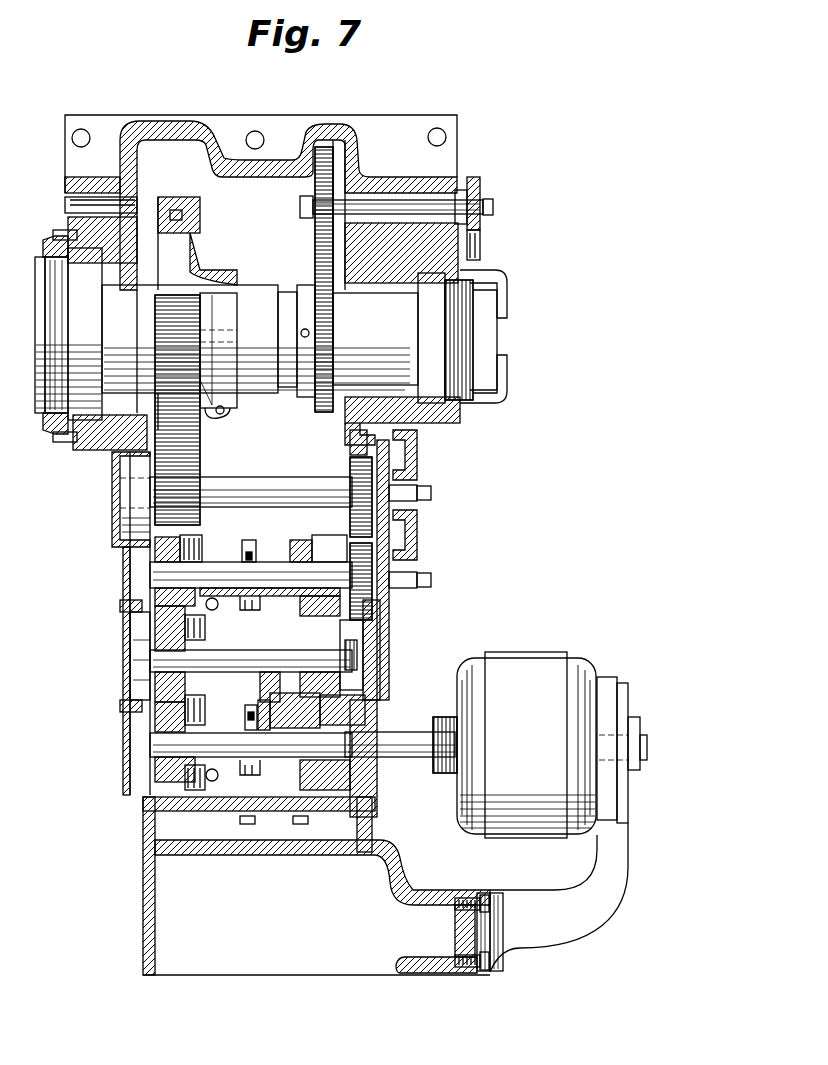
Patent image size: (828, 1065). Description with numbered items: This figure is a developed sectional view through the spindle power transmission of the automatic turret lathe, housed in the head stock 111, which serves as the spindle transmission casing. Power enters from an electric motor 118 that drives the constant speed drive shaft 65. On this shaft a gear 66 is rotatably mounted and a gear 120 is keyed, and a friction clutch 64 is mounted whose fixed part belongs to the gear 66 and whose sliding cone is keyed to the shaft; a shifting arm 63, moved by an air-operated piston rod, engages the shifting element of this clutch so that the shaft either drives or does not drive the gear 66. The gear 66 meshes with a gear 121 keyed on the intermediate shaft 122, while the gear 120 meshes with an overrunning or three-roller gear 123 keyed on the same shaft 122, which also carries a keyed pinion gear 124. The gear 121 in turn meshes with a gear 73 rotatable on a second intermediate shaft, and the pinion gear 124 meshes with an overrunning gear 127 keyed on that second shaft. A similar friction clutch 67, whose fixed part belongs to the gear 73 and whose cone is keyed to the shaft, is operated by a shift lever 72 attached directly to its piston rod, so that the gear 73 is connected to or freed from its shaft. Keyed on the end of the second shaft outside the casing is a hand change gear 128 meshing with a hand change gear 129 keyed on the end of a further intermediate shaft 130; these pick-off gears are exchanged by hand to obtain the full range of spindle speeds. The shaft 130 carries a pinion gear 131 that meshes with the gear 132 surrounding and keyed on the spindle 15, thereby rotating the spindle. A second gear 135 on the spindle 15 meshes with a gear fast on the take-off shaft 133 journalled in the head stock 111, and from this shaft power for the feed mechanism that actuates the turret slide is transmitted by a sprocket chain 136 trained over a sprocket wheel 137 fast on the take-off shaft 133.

The main shaft 15 is at (260, 341).
The shifting arm 63 is at (252, 718).
The friction clutch 64 is at (212, 710).
The constant speed drive shaft 65 is at (251, 745).
The gear 66 is at (150, 790).
The friction clutch 67 is at (215, 548).
The shift lever 72 is at (250, 552).
The gear 73 is at (152, 620).
The head stock 111 is at (440, 420).
The electric motor 118 is at (590, 658).
The gear 120 is at (282, 772).
The gear 121 is at (190, 641).
The intermediate shaft 122 is at (251, 661).
The overrunning gear 123 is at (282, 716).
The pinion gear 124 is at (366, 687).
The overrunning gear 127 is at (290, 548).
The hand change gear 128 is at (410, 600).
The hand change gear 129 is at (412, 472).
The intermediate shaft 130 is at (296, 482).
The pinion gear 131 is at (200, 485).
The gear 132 is at (200, 212).
The take-off shaft 133 is at (402, 210).
The gear 135 is at (318, 268).
The sprocket chain 136 is at (482, 246).
The sprocket wheel 137 is at (480, 186).